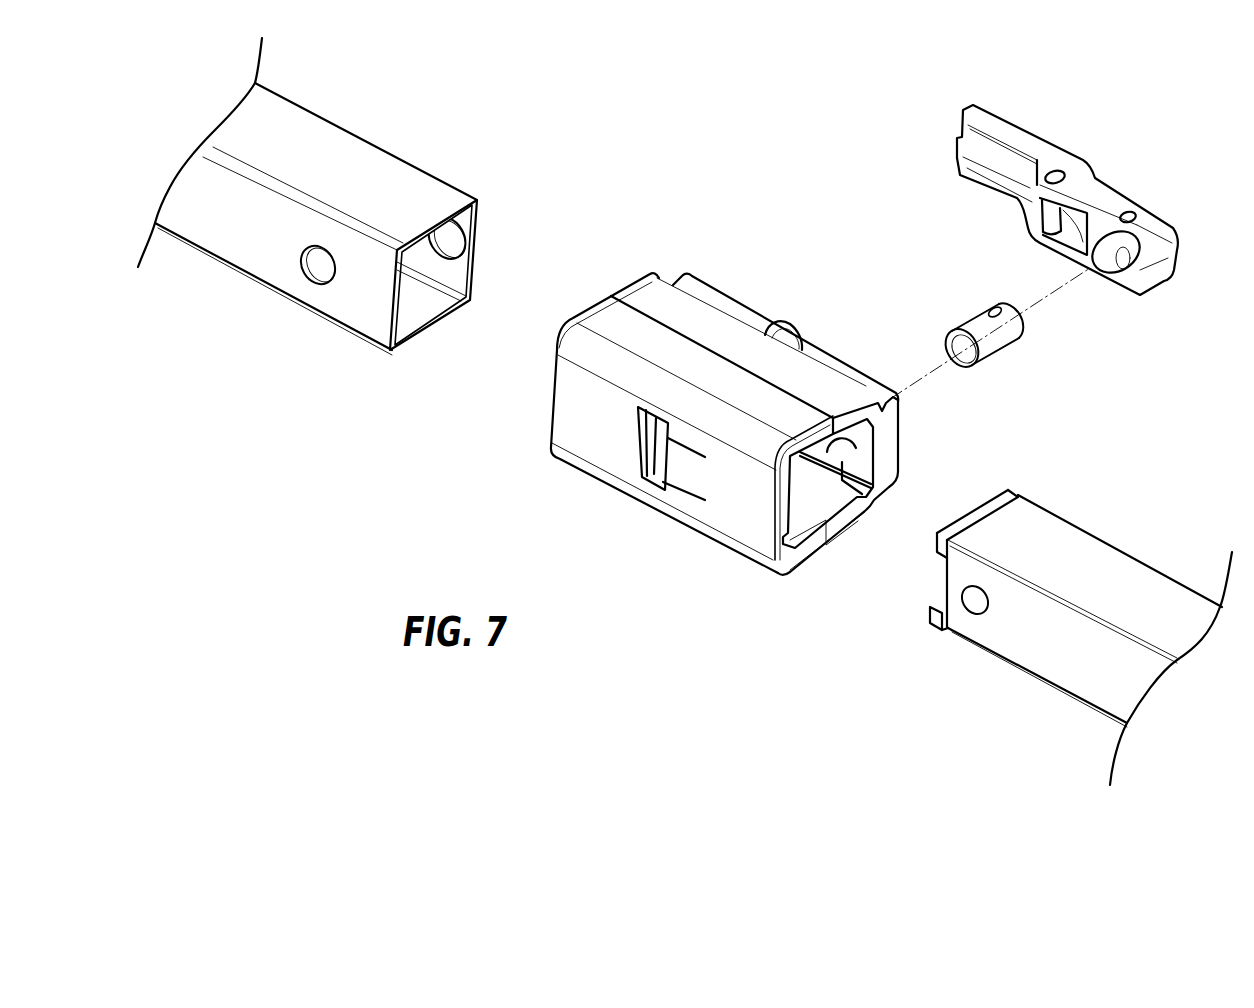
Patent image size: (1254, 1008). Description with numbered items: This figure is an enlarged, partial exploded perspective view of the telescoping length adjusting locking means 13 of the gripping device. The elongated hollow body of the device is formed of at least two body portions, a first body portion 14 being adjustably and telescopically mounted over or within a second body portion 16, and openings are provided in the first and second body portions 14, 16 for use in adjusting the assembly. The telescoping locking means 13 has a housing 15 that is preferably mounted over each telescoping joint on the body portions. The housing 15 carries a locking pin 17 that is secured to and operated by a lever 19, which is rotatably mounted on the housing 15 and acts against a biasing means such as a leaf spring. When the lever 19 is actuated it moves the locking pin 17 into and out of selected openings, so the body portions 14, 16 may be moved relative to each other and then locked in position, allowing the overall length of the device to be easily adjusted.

The telescoping locking means 13 is at (900, 85).
The first body portion 14 is at (363, 160).
The housing 15 is at (603, 445).
The second body portion 16 is at (1080, 557).
The locking pin 17 is at (997, 340).
The lever 19 is at (1058, 155).